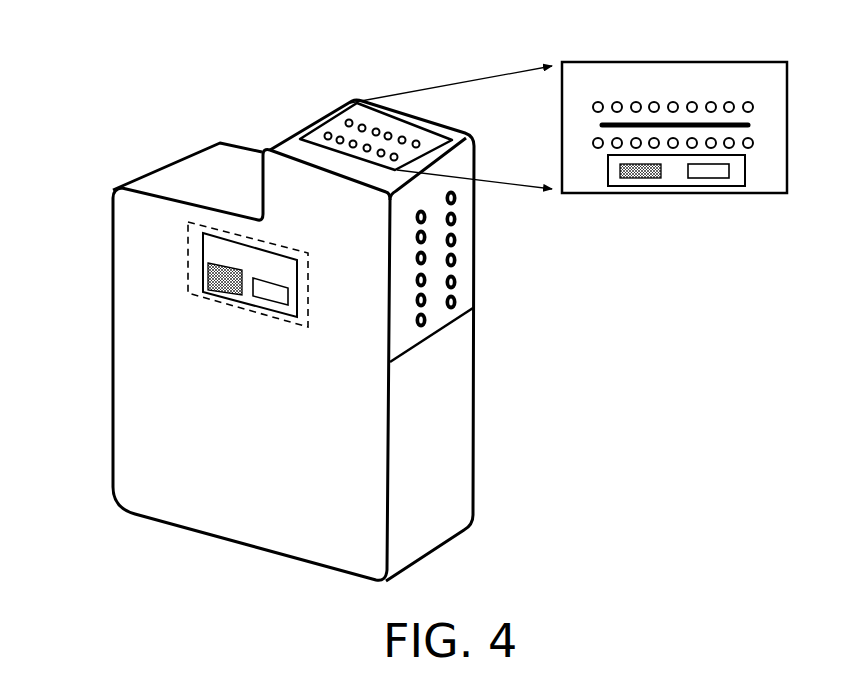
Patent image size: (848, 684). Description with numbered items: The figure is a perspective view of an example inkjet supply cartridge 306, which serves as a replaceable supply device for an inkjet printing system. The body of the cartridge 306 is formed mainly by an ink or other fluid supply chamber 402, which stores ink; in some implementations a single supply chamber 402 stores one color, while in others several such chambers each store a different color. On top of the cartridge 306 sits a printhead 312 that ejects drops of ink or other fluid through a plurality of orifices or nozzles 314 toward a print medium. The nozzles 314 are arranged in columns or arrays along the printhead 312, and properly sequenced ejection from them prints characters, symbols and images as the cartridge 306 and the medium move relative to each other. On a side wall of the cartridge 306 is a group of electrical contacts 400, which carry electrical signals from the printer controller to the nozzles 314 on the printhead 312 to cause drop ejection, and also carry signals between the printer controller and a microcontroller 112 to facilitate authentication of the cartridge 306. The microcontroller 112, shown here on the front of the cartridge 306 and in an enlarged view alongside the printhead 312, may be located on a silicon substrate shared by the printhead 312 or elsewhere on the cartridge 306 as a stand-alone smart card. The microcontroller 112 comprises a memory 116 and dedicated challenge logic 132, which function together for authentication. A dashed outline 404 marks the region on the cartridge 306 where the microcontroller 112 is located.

The inkjet supply cartridge 306 is at (117, 53).
The printhead 312 is at (357, 153).
The nozzles 314 is at (360, 126).
The microcontroller 112 is at (297, 273).
The dedicated challenge logic 132 is at (208, 276).
The memory 116 is at (290, 300).
The electrical contacts 400 is at (467, 270).
The ink supply chamber 402 is at (130, 418).
The recess 404 is at (270, 245).